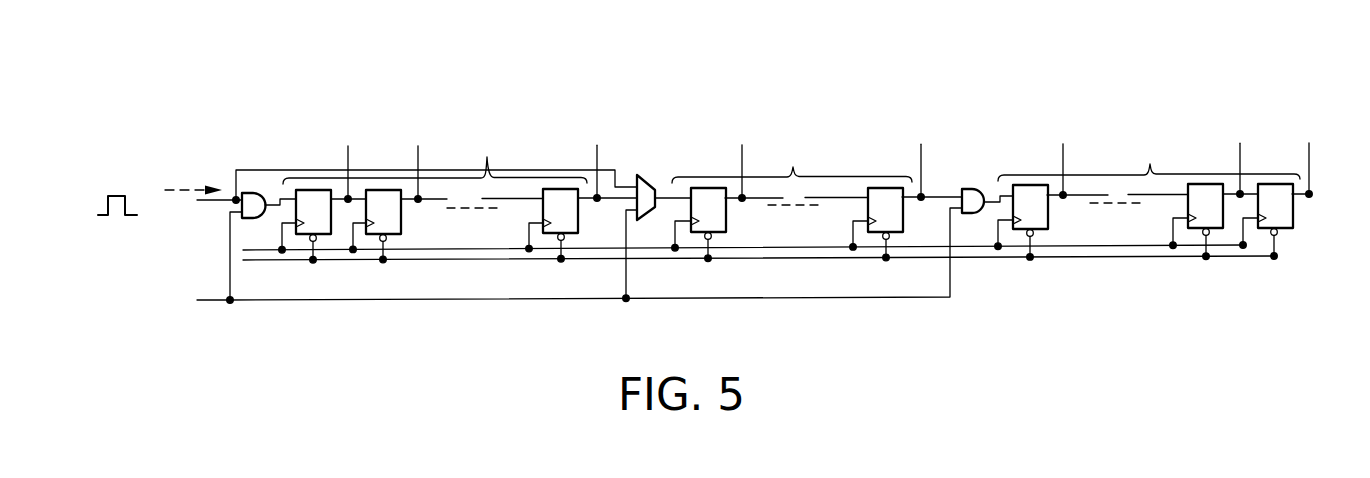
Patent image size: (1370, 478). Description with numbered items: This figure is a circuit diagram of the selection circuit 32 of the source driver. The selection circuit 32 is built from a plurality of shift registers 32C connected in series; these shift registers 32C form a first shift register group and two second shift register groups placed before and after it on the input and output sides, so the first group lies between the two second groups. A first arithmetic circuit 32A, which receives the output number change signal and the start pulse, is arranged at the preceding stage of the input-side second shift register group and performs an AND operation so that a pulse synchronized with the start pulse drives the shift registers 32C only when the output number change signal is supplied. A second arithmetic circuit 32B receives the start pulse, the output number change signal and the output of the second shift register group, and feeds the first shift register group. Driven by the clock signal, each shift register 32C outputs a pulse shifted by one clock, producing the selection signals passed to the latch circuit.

The selection circuit 32 is at (876, 76).
The first arithmetic circuit 32A is at (248, 193).
The second arithmetic circuit 32B is at (665, 160).
The shift register 32C is at (575, 233).